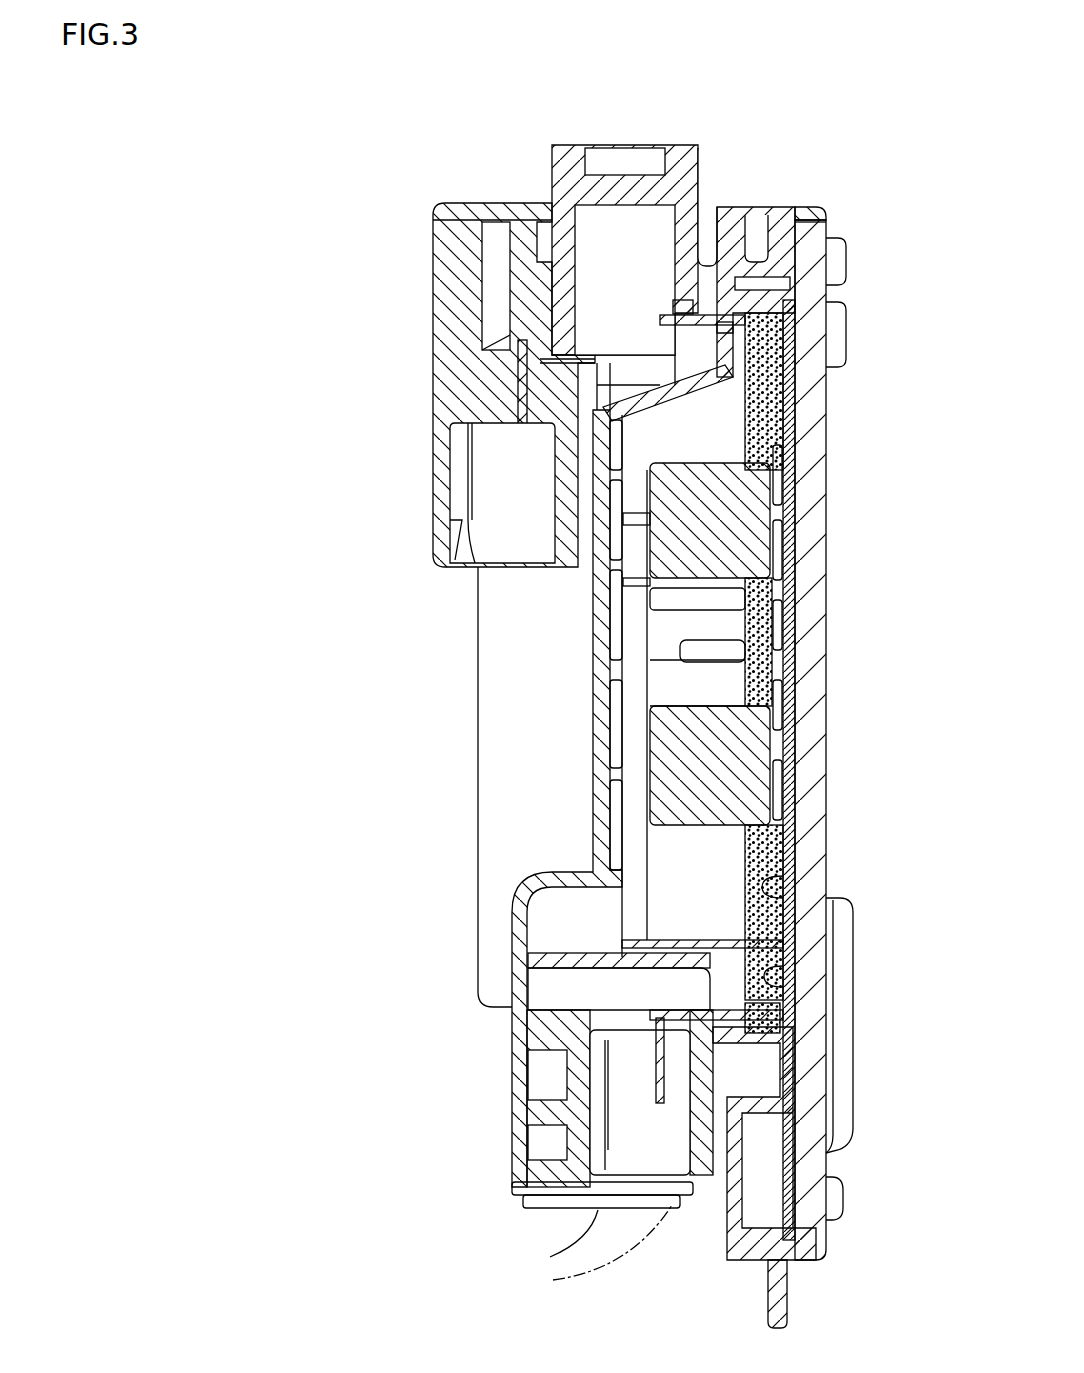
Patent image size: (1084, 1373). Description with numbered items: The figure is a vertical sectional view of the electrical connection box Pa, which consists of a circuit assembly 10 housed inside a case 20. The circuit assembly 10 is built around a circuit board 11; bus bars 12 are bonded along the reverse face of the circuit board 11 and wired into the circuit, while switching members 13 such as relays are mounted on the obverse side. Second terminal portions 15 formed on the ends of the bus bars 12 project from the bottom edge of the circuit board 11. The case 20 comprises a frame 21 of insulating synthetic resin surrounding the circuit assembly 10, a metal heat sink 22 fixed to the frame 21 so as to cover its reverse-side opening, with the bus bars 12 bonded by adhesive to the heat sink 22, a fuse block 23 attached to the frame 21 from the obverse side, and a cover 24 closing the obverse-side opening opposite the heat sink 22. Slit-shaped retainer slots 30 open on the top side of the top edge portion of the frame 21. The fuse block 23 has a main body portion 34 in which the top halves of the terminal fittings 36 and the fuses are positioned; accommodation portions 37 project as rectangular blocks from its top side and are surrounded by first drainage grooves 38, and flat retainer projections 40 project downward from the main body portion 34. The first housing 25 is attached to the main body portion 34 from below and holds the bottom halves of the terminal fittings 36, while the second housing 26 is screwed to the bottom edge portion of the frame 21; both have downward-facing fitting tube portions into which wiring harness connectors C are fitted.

The electrical connection box Pa is at (880, 176).
The case 20 is at (346, 401).
The fuse block 23 is at (455, 181).
The main body portion 34 is at (492, 207).
The accommodation portion 37 is at (575, 162).
The first drainage groove 38 is at (712, 215).
The retainer projection 40 is at (758, 228).
The retainer slot 30 is at (767, 241).
The terminal fitting 36 is at (520, 468).
The first housing 25 is at (440, 507).
The heat sink 22 is at (810, 580).
The circuit assembly 10 is at (688, 856).
The circuit board 11 is at (793, 897).
The bus bar 12 is at (797, 985).
The cover 24 is at (600, 695).
The switching member 13 is at (683, 740).
The second housing 26 is at (578, 1160).
The wiring harness connector C is at (628, 1097).
The second terminal portion 15 is at (705, 1065).
The frame 21 is at (773, 1243).